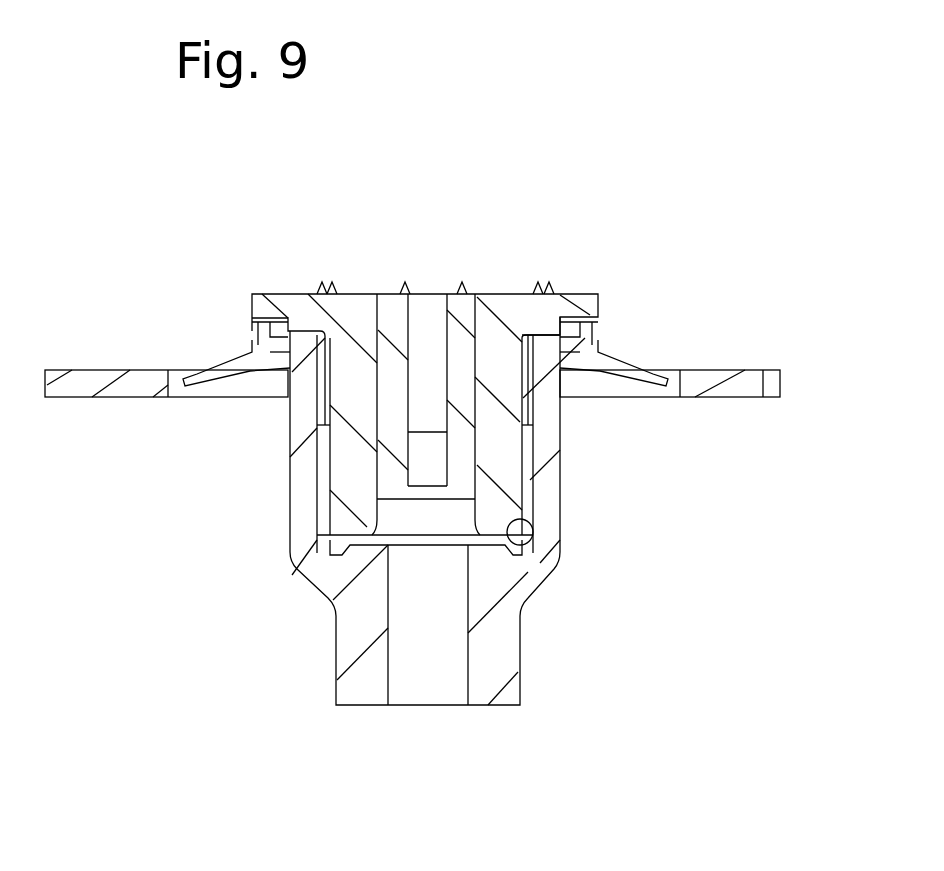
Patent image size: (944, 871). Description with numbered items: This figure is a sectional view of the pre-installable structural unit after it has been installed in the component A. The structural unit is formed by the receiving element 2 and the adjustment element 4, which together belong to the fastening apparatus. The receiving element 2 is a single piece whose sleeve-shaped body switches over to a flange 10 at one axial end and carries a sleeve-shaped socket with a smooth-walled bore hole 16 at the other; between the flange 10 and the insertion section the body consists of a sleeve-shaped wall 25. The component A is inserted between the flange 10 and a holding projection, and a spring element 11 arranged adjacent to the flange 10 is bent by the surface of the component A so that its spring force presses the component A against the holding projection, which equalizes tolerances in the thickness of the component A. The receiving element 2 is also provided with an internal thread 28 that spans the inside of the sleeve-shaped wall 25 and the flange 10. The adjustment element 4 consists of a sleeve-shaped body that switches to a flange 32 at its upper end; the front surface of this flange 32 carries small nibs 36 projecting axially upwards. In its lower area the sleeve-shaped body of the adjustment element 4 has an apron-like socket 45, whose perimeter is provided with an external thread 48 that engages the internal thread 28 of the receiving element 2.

The component A is at (783, 378).
The receiving element 2 is at (322, 738).
The adjustment element 4 is at (368, 255).
The flange 10 is at (263, 352).
The spring element 11 is at (623, 370).
The bore hole 16 is at (465, 690).
The sleeve-shaped wall 25 is at (300, 497).
The internal thread 28 is at (520, 546).
The flange 32 is at (587, 302).
The small nibs 36 is at (463, 290).
The apron-like socket 45 is at (357, 495).
The external thread 48 is at (532, 497).